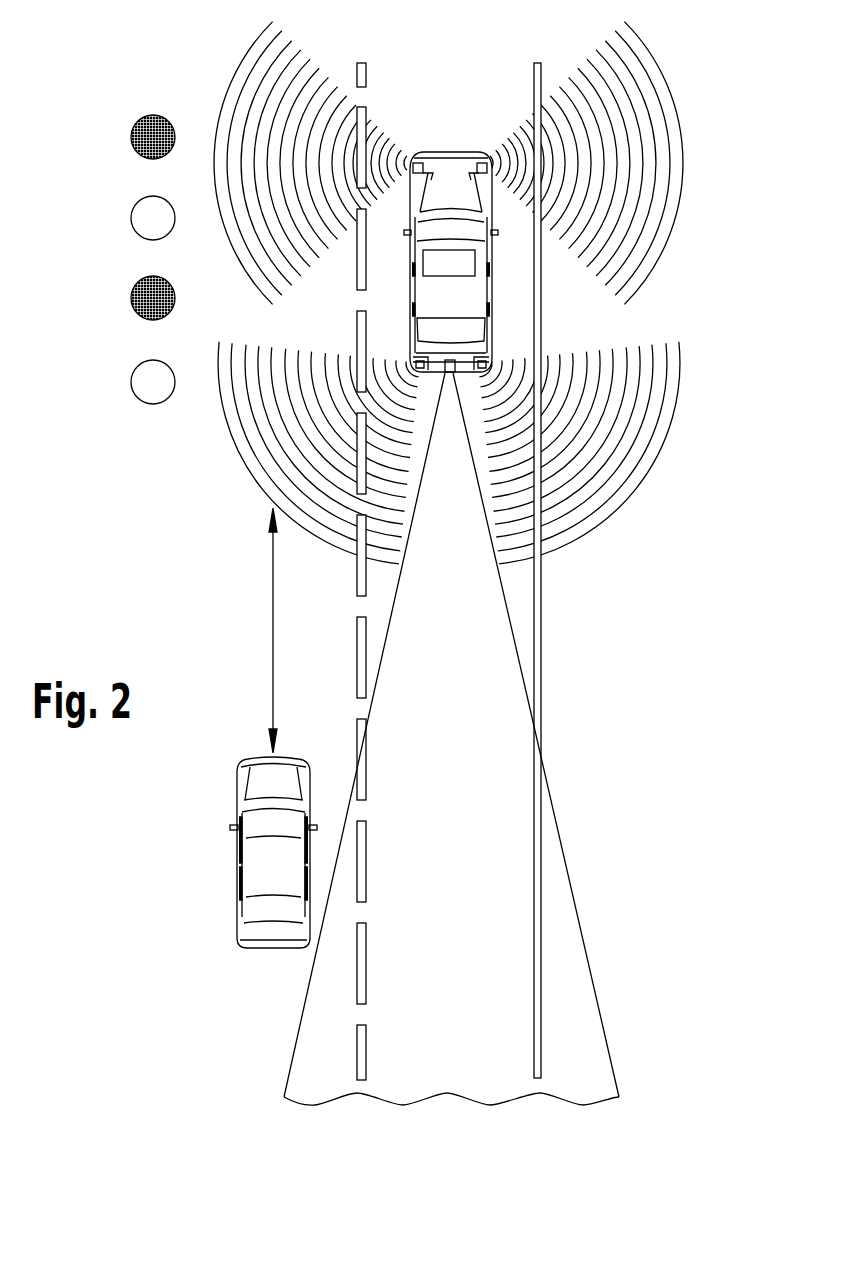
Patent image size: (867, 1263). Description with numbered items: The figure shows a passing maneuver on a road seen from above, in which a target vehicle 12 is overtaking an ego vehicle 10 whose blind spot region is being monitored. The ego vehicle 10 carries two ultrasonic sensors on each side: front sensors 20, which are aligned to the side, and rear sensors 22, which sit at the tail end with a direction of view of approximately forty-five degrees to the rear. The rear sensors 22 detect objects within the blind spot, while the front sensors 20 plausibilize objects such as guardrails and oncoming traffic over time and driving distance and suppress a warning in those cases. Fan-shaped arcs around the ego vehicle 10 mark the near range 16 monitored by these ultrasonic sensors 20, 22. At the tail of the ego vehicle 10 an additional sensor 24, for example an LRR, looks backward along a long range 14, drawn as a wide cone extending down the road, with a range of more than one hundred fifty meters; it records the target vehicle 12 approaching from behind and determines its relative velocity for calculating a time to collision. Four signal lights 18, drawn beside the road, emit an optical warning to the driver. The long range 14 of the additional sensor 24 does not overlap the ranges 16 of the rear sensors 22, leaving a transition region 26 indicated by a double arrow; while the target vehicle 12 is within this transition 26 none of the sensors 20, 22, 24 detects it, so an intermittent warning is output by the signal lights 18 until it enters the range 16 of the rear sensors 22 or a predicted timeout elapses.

The ego vehicle 10 is at (458, 152).
The target vehicle 12 is at (262, 859).
The long range 14 is at (576, 912).
The near range 16 is at (262, 82).
The signal lights 18 is at (100, 178).
The front sensors 20 is at (418, 155).
The rear sensors 22 is at (418, 362).
The additional sensor 24 is at (445, 360).
The transition region 26 is at (270, 614).